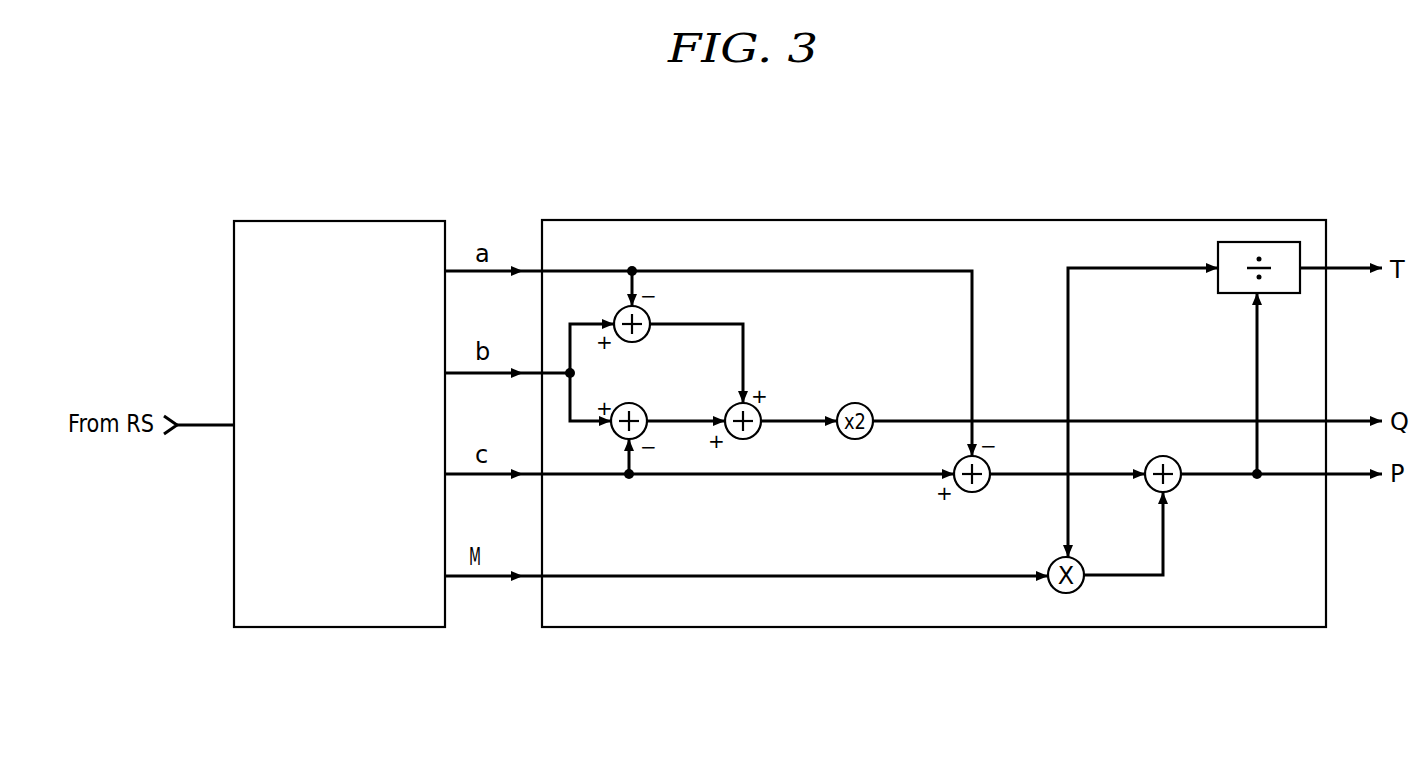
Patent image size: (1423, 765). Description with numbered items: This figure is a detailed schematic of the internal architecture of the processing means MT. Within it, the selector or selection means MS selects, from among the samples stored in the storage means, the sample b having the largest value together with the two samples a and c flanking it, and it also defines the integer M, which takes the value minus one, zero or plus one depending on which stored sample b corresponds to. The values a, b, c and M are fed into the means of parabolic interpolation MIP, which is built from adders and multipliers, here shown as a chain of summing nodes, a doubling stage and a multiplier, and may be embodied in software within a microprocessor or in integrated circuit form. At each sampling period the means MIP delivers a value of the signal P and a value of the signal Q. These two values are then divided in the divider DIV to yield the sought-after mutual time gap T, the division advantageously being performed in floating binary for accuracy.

The processing means MT is at (934, 341).
The means of parabolic interpolation MIP is at (926, 212).
The selection means MS is at (339, 424).
The divider DIV is at (1234, 295).